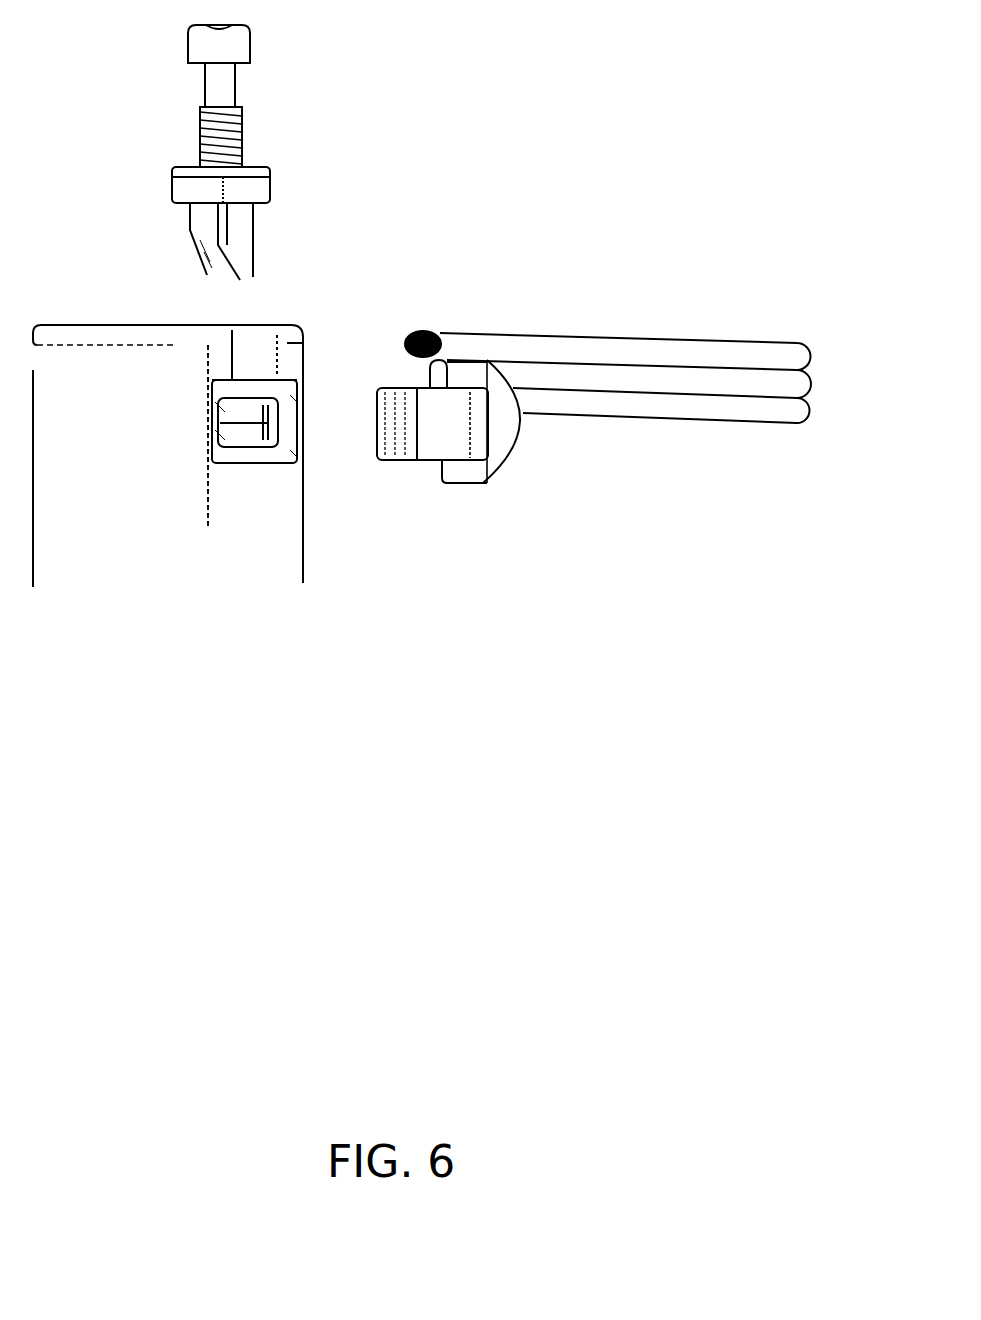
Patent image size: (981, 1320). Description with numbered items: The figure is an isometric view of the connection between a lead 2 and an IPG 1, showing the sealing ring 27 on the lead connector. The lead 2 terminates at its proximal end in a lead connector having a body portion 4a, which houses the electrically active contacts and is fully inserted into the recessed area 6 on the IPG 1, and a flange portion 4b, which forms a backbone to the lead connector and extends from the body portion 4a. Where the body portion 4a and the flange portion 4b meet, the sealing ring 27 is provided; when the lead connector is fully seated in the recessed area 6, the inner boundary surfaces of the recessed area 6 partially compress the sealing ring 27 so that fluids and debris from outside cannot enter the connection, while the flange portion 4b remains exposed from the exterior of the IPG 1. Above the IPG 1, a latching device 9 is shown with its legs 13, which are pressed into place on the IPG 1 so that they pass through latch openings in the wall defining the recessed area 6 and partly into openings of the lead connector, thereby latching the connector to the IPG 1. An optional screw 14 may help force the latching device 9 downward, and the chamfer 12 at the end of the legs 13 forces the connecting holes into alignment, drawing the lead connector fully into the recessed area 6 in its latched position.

The IPG 1 is at (100, 512).
The lead 2 is at (699, 338).
The body portion 4a is at (435, 441).
The flange portion 4b is at (510, 430).
The recessed area 6 is at (253, 477).
The latching device 9 is at (167, 199).
The chamfer 12 is at (192, 275).
The legs 13 is at (259, 225).
The screw 14 is at (281, 57).
The sealing ring 27 is at (476, 444).